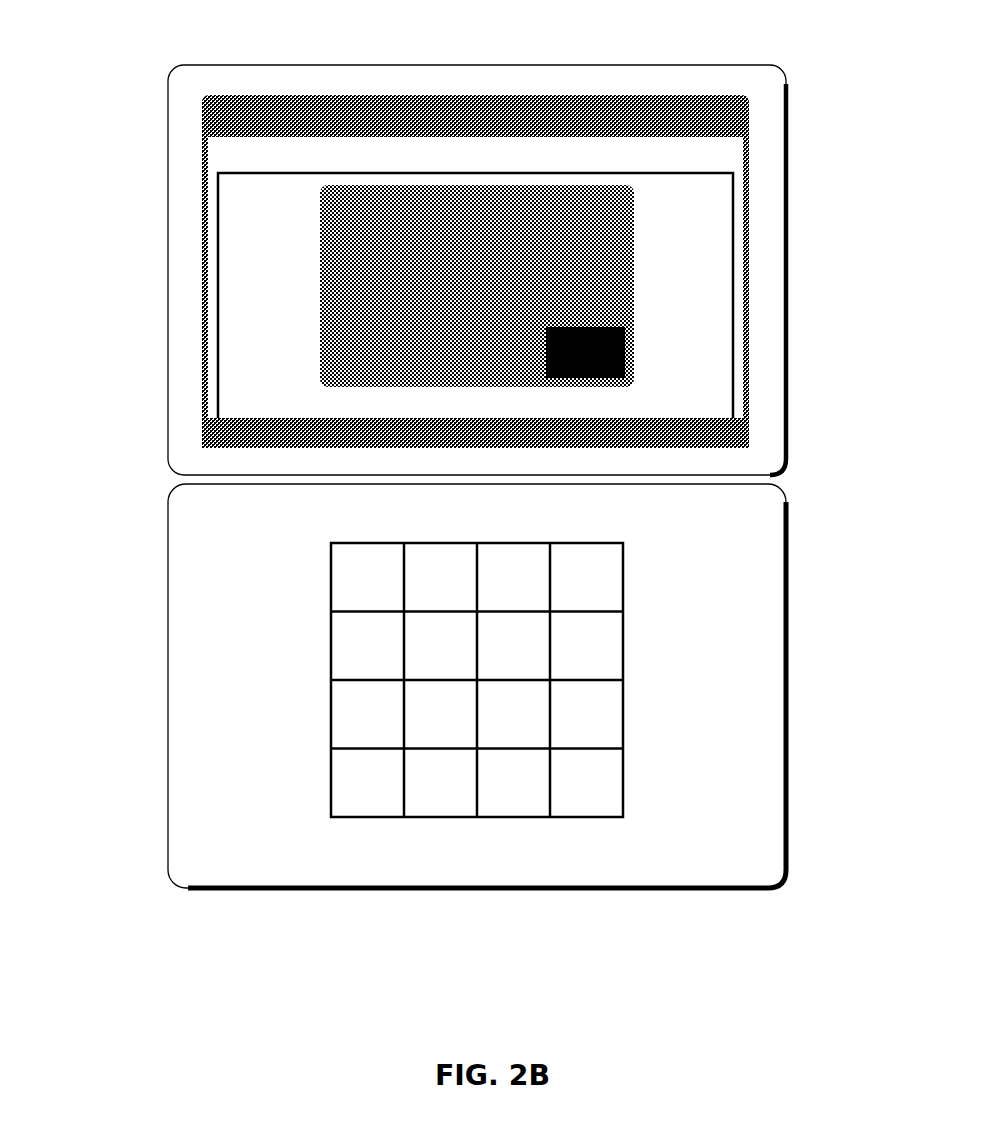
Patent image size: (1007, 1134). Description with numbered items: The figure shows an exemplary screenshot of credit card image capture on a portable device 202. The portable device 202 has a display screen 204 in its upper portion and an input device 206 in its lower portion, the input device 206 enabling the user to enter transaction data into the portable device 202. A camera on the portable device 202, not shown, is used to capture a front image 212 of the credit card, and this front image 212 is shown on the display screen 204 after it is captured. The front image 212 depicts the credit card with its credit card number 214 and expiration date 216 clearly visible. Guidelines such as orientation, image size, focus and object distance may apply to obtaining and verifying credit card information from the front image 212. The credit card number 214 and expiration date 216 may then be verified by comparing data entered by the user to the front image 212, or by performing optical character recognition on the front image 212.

The portable device 202 is at (545, 65).
The display screen 204 is at (202, 110).
The input device 206 is at (549, 817).
The front image 212 is at (770, 407).
The credit card number 214 is at (325, 298).
The expiration date 216 is at (400, 375).